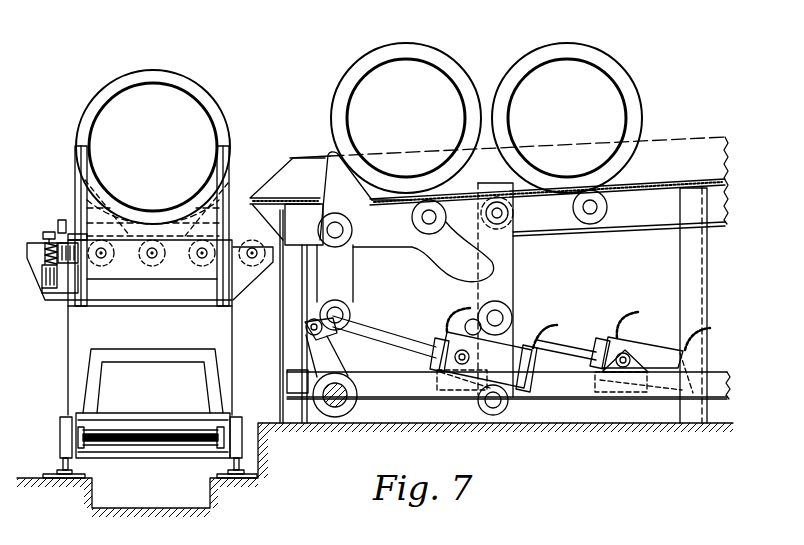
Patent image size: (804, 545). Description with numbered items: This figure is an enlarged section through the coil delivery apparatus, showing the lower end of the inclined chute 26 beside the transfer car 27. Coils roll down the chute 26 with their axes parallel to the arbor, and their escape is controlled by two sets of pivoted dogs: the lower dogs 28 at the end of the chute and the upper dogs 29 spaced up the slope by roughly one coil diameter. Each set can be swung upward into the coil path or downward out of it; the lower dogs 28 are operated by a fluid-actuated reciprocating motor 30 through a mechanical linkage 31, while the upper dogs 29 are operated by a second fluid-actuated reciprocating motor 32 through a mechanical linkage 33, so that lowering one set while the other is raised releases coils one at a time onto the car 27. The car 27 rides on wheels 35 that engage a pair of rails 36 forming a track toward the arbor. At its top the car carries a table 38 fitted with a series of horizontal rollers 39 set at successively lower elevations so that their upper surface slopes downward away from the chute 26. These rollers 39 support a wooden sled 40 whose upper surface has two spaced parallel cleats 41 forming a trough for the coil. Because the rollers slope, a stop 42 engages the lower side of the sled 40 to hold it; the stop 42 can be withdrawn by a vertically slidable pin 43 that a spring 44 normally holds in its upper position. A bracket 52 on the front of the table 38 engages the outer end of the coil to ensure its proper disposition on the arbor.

The inclined chute 26 is at (668, 178).
The transfer car 27 is at (68, 350).
The lower dogs 28 is at (327, 168).
The upper dogs 29 is at (520, 148).
The fluid-actuated reciprocating motor 30 is at (528, 345).
The mechanical linkage 31 is at (345, 292).
The fluid-actuated reciprocating motor 32 is at (655, 360).
The mechanical linkage 33 is at (505, 278).
The wheels 35 is at (60, 436).
The rails 36 is at (57, 470).
The table 38 is at (42, 284).
The horizontal rollers 39 is at (190, 266).
The sled 40 is at (66, 240).
The cleats 41 is at (128, 204).
The stop 42 is at (56, 228).
The vertically slidable pin 43 is at (46, 232).
The spring 44 is at (44, 258).
The bracket 52 is at (75, 152).